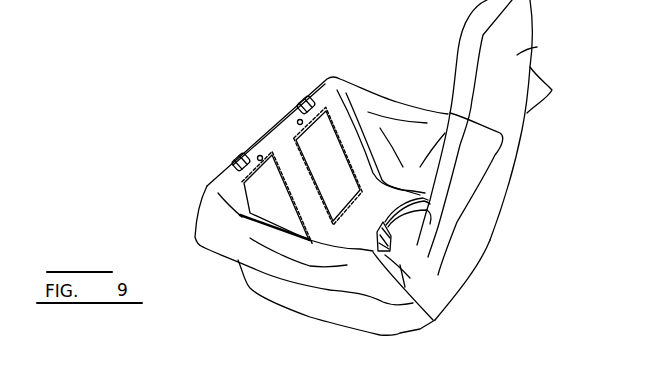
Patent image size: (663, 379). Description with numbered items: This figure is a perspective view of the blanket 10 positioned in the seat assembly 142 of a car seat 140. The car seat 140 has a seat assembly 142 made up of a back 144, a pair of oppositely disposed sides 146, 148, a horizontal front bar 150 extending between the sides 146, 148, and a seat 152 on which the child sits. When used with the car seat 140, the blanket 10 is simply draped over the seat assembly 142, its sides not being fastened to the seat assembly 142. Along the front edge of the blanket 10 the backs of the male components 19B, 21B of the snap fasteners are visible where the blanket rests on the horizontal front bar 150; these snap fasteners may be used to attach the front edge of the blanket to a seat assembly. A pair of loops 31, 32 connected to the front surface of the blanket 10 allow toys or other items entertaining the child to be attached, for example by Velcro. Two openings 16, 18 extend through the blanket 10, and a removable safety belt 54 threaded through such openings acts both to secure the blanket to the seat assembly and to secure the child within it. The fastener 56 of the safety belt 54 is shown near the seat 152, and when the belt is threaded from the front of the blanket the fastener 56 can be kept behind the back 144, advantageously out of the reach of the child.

The blanket 10 is at (460, 243).
The first opening 16 is at (289, 218).
The second opening 18 is at (344, 178).
The male component back of snap fastener 19B is at (260, 155).
The male component back of snap fastener 21B is at (300, 119).
The loop 31 is at (240, 157).
The loop 32 is at (310, 100).
The removable safety belt 54 is at (403, 203).
The fastener 56 is at (390, 240).
The car seat 140 is at (522, 188).
The seat assembly 142 is at (394, 55).
The back 144 is at (517, 55).
The side 146 is at (316, 252).
The side 148 is at (402, 113).
The horizontal front bar 150 is at (267, 129).
The seat 152 is at (374, 243).